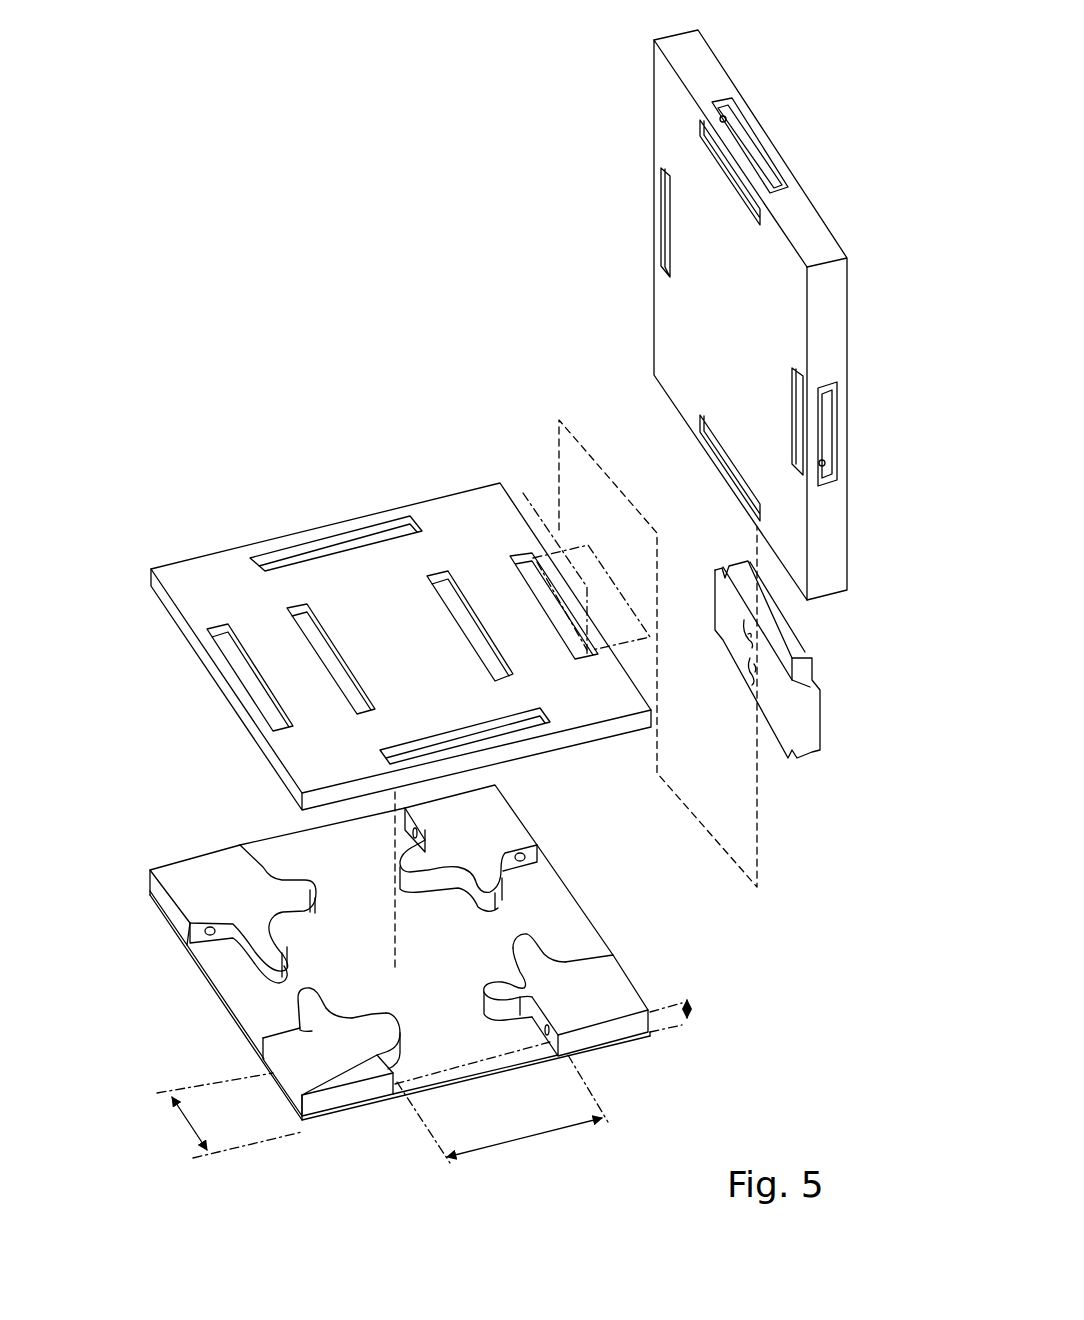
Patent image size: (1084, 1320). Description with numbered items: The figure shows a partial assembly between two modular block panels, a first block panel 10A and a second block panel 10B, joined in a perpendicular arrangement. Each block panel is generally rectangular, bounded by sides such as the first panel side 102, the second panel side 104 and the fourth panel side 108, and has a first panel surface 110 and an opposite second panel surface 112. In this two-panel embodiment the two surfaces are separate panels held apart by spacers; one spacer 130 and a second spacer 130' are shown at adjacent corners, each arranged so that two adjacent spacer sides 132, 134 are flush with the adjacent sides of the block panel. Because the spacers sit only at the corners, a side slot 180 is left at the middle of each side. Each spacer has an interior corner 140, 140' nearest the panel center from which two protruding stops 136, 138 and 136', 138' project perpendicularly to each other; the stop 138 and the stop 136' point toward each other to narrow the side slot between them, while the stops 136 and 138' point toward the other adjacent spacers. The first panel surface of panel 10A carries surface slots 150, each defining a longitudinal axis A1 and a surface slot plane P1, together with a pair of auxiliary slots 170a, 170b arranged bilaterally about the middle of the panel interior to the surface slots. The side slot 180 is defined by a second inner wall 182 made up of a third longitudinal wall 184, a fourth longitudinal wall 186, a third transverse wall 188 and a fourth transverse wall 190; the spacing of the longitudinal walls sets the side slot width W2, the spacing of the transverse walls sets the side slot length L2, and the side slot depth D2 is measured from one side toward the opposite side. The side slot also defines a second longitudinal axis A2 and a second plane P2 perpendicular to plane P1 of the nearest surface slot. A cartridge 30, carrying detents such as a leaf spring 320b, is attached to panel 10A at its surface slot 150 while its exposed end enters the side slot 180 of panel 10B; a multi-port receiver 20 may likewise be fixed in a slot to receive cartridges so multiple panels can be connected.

The multi-port receiver 20 is at (652, 205).
The second block panel 10B is at (663, 345).
The first block panel 10A is at (452, 510).
The surface slot 150 is at (662, 240).
The side slot 180 is at (752, 150).
The first panel side 102 is at (232, 553).
The first panel surface 110 is at (168, 572).
The fourth longitudinal wall 186 is at (225, 697).
The auxiliary slot 170a is at (318, 642).
The auxiliary slot 170b is at (492, 663).
The longitudinal axis A1 is at (512, 573).
The surface slot plane P1 is at (526, 498).
The second plane P2 is at (600, 575).
The cartridge 30 is at (815, 727).
The leaf spring 320b is at (750, 676).
The fourth panel side 108 is at (287, 1112).
The second panel side 104 is at (327, 1125).
The third longitudinal wall 184 is at (212, 983).
The second inner wall 182 is at (202, 968).
The spacer side 134 is at (363, 1100).
The third transverse wall 188 is at (197, 937).
The second panel surface 112 is at (156, 921).
The spacer 130 is at (312, 1059).
The fourth transverse wall 190 is at (268, 1070).
The spacer side 132 is at (285, 1093).
The protruding stop 136 is at (316, 991).
The interior corner 140 is at (351, 991).
The protruding stop 138 is at (407, 1028).
The spacer 130' is at (546, 994).
The protruding stop 136' is at (483, 989).
The interior corner 140' is at (487, 961).
The protruding stop 138' is at (539, 930).
The side slot width W2 is at (693, 1010).
The side slot depth D2 is at (183, 1120).
The side slot length L2 is at (530, 1132).
The second longitudinal axis A2 is at (440, 1082).